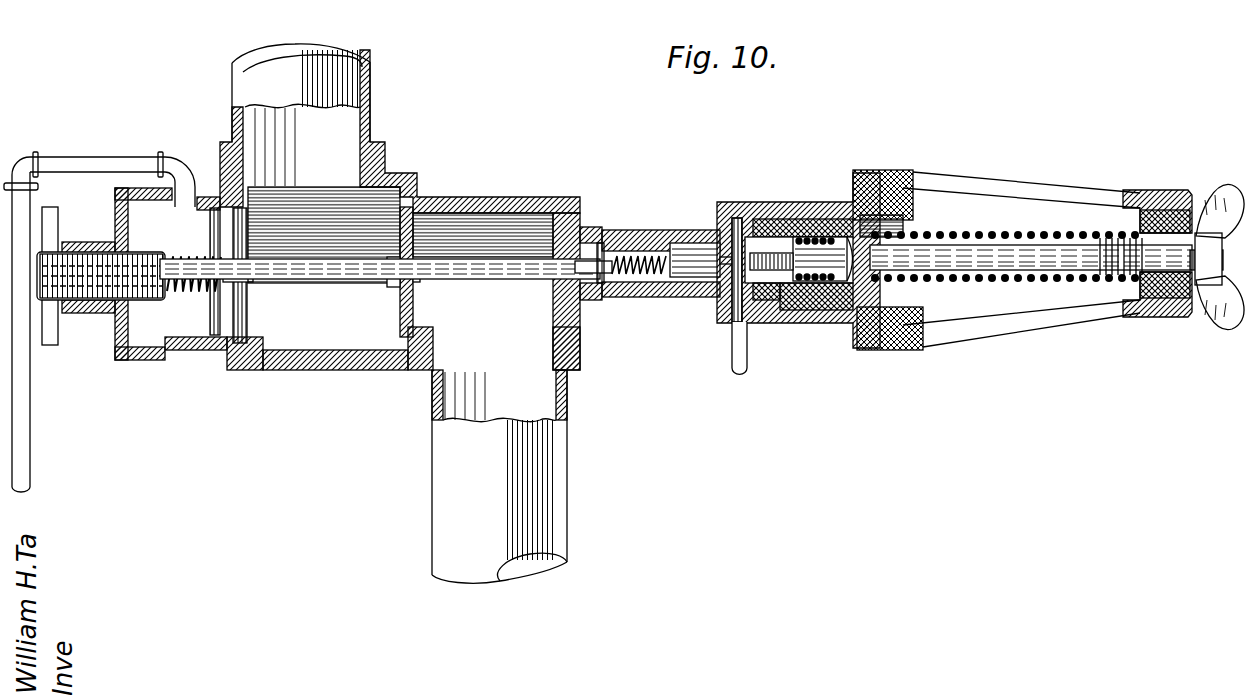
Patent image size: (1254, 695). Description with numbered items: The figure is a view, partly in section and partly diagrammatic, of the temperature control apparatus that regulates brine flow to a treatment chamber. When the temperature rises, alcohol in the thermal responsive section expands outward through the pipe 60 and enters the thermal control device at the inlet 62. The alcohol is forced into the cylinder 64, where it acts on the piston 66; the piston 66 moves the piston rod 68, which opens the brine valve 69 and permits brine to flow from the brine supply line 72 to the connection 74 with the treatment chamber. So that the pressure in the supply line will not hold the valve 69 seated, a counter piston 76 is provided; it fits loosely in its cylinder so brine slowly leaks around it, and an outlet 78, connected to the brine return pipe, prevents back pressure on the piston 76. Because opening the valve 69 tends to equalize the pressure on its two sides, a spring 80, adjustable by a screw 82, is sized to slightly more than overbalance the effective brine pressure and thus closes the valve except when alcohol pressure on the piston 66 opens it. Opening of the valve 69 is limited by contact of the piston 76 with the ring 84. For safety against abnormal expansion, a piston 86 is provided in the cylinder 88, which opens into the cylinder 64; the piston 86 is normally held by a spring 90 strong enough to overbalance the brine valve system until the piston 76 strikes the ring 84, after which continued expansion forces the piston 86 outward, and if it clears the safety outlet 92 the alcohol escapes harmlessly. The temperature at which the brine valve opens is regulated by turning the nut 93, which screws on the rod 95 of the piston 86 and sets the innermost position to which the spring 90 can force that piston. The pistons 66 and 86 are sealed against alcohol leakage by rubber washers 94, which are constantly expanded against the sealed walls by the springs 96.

The pipe 60 is at (748, 362).
The inlet 62 is at (745, 325).
The cylinder 64 is at (692, 252).
The piston 66 is at (668, 283).
The piston rod 68 is at (522, 262).
The brine valve 69 is at (407, 222).
The brine supply line 72 is at (370, 92).
The connection 74 is at (565, 387).
The counter piston 76 is at (248, 333).
The outlet 78 is at (185, 156).
The spring 80 is at (182, 295).
The screw 82 is at (73, 300).
The ring 84 is at (210, 300).
The piston 86 is at (787, 218).
The cylinder 88 is at (820, 206).
The spring 90 is at (993, 232).
The safety outlet 92 is at (833, 308).
The nut 93 is at (1218, 304).
The rubber washers 94 is at (658, 243).
The rod 95 is at (1000, 268).
The springs 96 is at (615, 250).